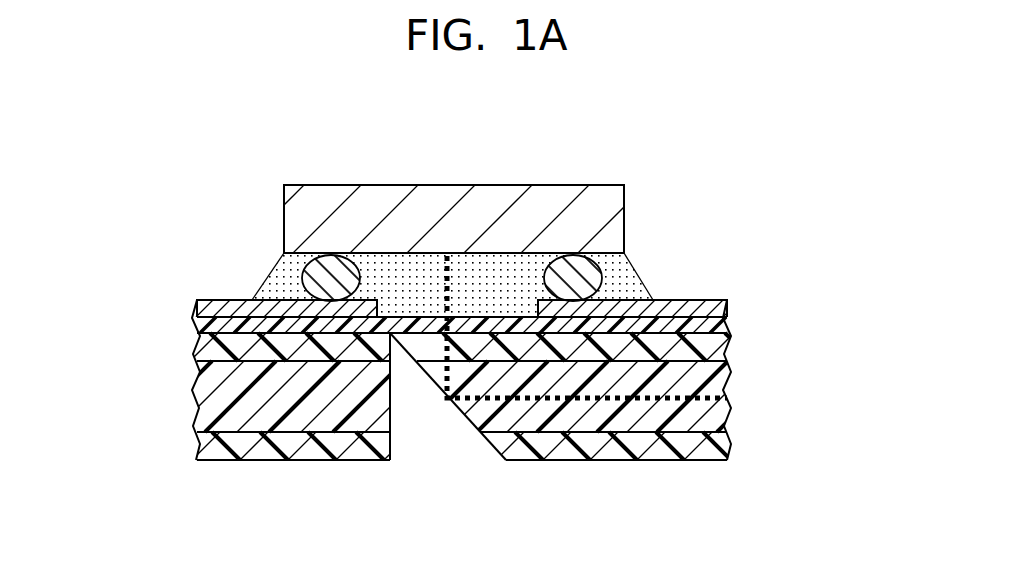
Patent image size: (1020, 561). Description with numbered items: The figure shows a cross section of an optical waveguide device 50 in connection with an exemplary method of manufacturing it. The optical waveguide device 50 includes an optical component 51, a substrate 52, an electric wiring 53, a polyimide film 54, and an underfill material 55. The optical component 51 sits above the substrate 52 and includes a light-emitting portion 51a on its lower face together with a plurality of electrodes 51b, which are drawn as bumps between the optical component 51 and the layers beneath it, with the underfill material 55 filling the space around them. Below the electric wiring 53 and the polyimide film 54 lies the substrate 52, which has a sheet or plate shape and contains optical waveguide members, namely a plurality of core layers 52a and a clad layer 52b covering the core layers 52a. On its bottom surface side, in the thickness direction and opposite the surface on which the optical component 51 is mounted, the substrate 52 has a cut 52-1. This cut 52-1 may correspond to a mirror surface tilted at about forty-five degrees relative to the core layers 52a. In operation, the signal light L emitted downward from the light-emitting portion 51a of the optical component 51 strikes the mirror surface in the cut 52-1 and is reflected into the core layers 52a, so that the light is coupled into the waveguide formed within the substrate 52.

The optical waveguide device 50 is at (172, 233).
The optical component 51 is at (625, 200).
The light-emitting portion 51a is at (472, 256).
The electrodes 51b is at (310, 272).
The substrate 52 is at (852, 343).
The core layers 52a is at (735, 408).
The clad layer 52b is at (703, 424).
The cut 52-1 is at (438, 386).
The electric wiring 53 is at (198, 302).
The polyimide film 54 is at (197, 328).
The underfill material 55 is at (276, 256).
The signal light L is at (668, 400).